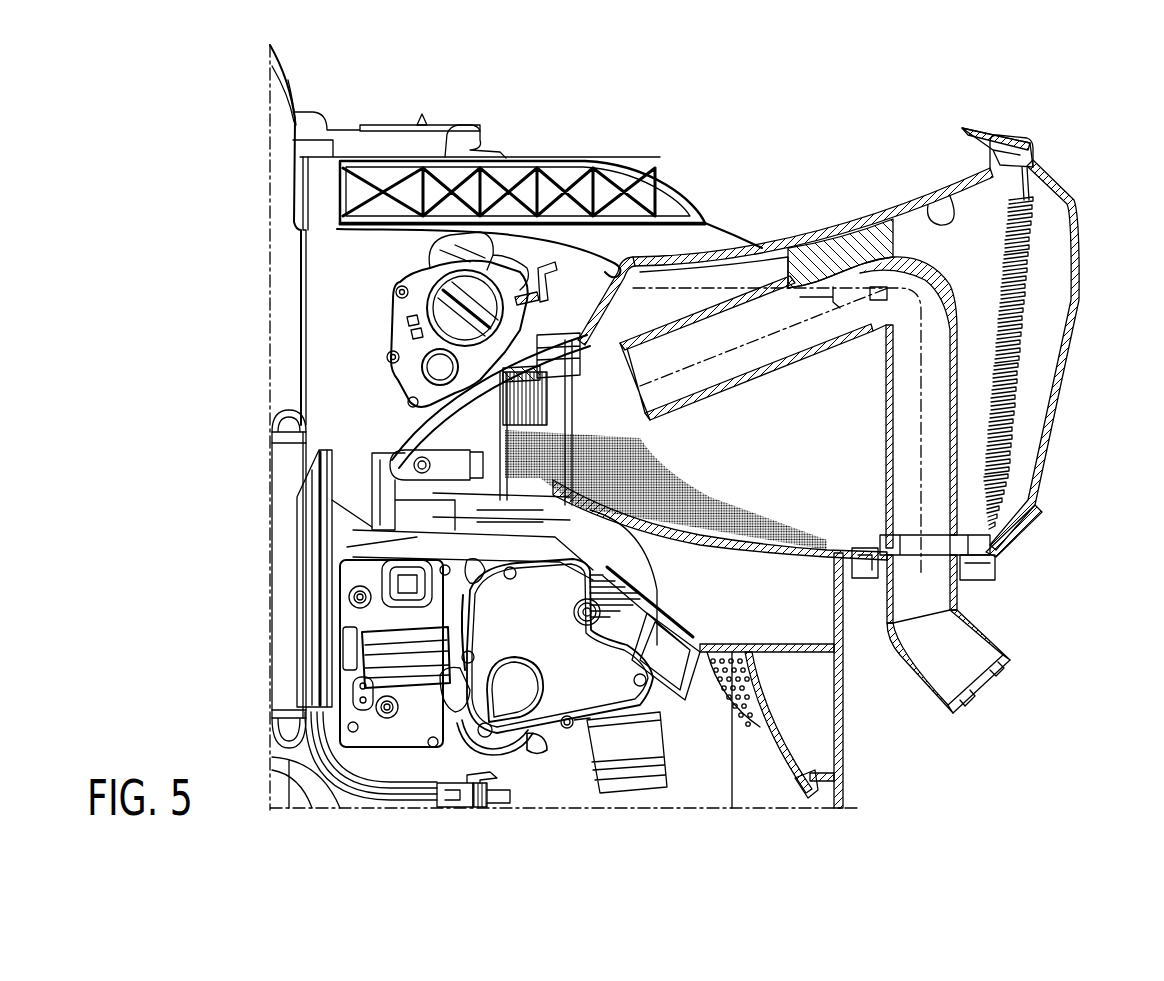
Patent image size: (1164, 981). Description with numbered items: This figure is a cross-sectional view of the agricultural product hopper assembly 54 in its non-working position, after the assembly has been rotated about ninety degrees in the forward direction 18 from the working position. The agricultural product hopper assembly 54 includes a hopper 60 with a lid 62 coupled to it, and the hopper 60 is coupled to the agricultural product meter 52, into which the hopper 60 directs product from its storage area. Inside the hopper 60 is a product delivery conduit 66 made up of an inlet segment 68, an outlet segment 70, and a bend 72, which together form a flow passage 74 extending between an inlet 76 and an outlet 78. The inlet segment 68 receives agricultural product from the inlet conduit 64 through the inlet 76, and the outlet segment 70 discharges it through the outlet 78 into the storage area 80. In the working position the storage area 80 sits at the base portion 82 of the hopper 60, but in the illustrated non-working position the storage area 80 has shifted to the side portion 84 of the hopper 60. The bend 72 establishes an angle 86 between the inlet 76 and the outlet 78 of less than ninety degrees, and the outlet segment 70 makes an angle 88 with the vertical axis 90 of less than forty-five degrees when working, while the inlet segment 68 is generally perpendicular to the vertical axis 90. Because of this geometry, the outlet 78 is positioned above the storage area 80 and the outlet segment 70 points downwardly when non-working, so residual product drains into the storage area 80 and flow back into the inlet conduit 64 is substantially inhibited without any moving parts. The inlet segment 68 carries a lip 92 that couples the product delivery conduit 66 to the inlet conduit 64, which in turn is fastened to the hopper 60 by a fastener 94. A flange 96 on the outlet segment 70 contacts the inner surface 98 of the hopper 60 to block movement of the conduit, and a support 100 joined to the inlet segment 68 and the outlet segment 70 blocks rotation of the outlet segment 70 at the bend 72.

The forward direction 18 is at (1018, 83).
The agricultural product meter 52 is at (477, 414).
The agricultural product hopper assembly 54 is at (957, 68).
The hopper 60 is at (817, 241).
The lid 62 is at (1079, 313).
The inlet conduit 64 is at (910, 660).
The product delivery conduit 66 is at (873, 467).
The inlet segment 68 is at (885, 440).
The outlet segment 70 is at (737, 376).
The bend 72 is at (947, 288).
The flow passage 74 is at (968, 432).
The inlet 76 is at (933, 567).
The outlet 78 is at (632, 400).
The storage area 80 is at (717, 487).
The base portion 82 is at (580, 340).
The side portion 84 is at (750, 503).
The angle 86 is at (882, 310).
The angle 88 is at (810, 297).
The vertical axis 90 is at (733, 287).
The lip 92 is at (960, 543).
The fastener 94 is at (863, 580).
The flange 96 is at (862, 233).
The inner surface 98 is at (948, 208).
The support 100 is at (872, 352).